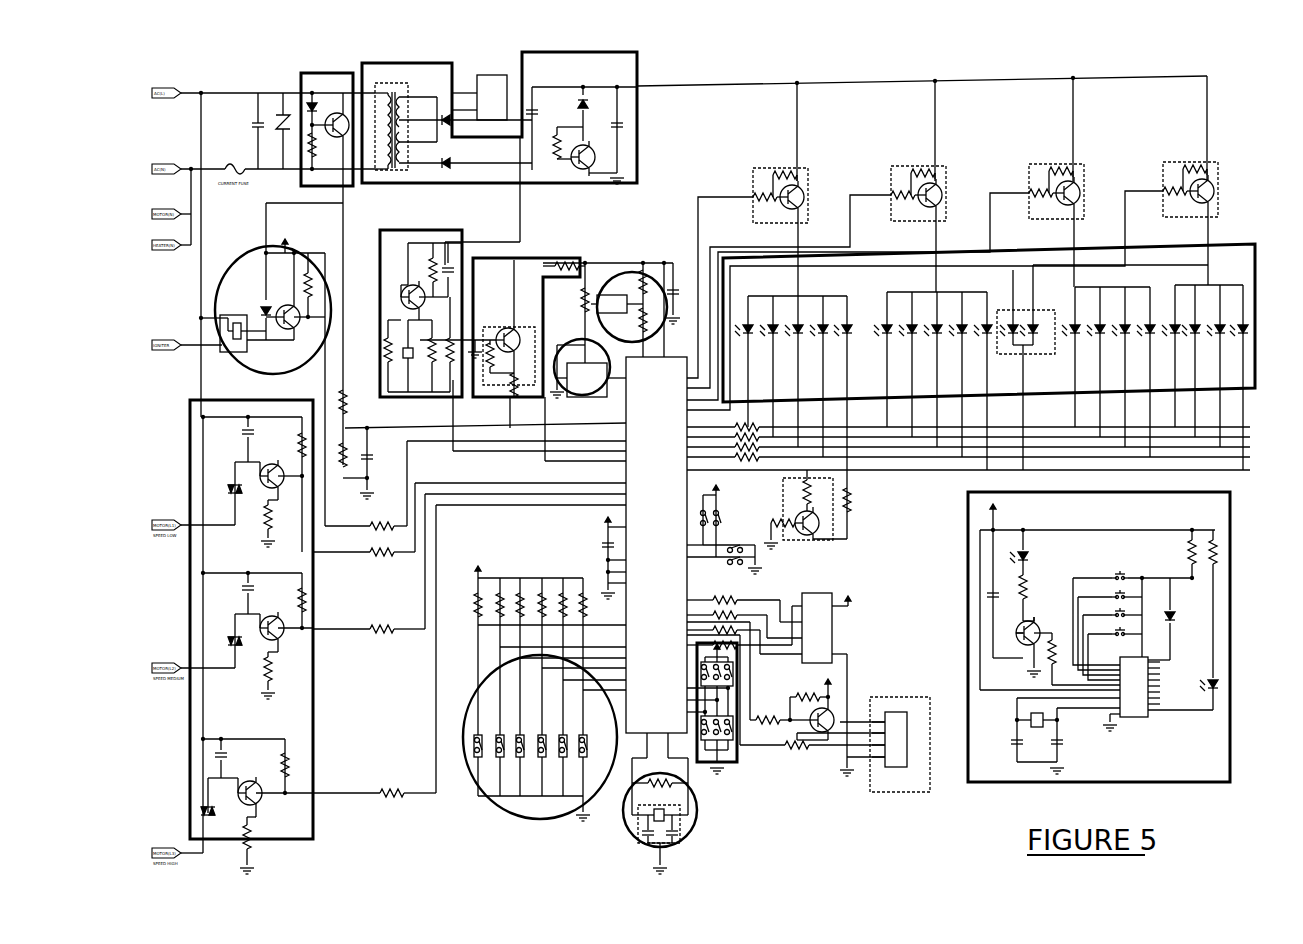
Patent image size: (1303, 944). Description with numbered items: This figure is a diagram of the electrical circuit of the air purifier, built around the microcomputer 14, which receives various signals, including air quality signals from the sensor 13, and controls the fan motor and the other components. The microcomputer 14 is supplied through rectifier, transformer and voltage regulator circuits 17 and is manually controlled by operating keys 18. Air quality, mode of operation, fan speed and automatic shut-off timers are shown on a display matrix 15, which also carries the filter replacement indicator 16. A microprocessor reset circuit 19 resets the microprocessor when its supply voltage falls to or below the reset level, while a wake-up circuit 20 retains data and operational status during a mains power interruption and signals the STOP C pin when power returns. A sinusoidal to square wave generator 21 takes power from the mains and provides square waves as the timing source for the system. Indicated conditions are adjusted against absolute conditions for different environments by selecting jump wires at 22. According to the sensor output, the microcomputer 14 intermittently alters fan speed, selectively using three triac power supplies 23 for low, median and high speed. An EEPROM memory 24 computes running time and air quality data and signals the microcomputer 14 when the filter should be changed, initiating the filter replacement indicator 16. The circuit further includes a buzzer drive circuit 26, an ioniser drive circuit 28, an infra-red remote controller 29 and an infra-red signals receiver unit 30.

The sensor 13 is at (503, 83).
The microcomputer 14 is at (657, 562).
The display matrix 15 is at (995, 339).
The filter replacement indicator 16 is at (850, 324).
The rectifier, transformer and voltage regulator circuits 17 is at (581, 117).
The operating keys 18 is at (553, 805).
The microprocessor reset circuit 19 is at (625, 278).
The wake-up circuit 20 is at (502, 327).
The sinusoidal to square wave generator 21 is at (307, 86).
The jump wires 22 is at (720, 758).
The triac power supplies 23 is at (268, 822).
The EEPROM memory 24 is at (815, 596).
The buzzer drive circuit 26 is at (452, 237).
The ioniser drive circuit 28 is at (250, 272).
The infra-red remote controller 29 is at (1099, 637).
The infra-red signals receiver unit 30 is at (577, 347).